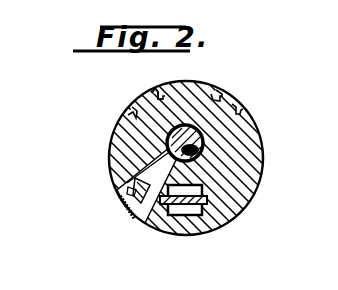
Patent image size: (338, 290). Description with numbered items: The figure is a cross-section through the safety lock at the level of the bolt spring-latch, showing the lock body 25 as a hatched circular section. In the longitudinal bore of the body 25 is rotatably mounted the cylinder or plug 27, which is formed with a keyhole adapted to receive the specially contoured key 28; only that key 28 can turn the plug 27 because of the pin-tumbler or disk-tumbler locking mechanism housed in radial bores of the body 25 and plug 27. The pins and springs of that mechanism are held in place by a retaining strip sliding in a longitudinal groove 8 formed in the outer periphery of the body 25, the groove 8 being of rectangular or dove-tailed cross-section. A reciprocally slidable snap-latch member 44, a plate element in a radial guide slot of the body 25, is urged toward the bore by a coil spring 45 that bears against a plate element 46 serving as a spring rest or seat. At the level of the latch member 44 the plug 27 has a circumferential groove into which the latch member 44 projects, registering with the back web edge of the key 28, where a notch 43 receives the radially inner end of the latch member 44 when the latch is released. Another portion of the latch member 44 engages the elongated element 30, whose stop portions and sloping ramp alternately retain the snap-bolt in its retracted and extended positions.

The longitudinal groove 8 is at (217, 101).
The body 25 is at (238, 170).
The plug 27 is at (204, 143).
The key 28 is at (165, 112).
The elongated element 30 is at (220, 210).
The notch 43 is at (145, 223).
The snap-latch member 44 is at (155, 165).
The coil spring 45 is at (128, 191).
The plate element 46 is at (127, 206).